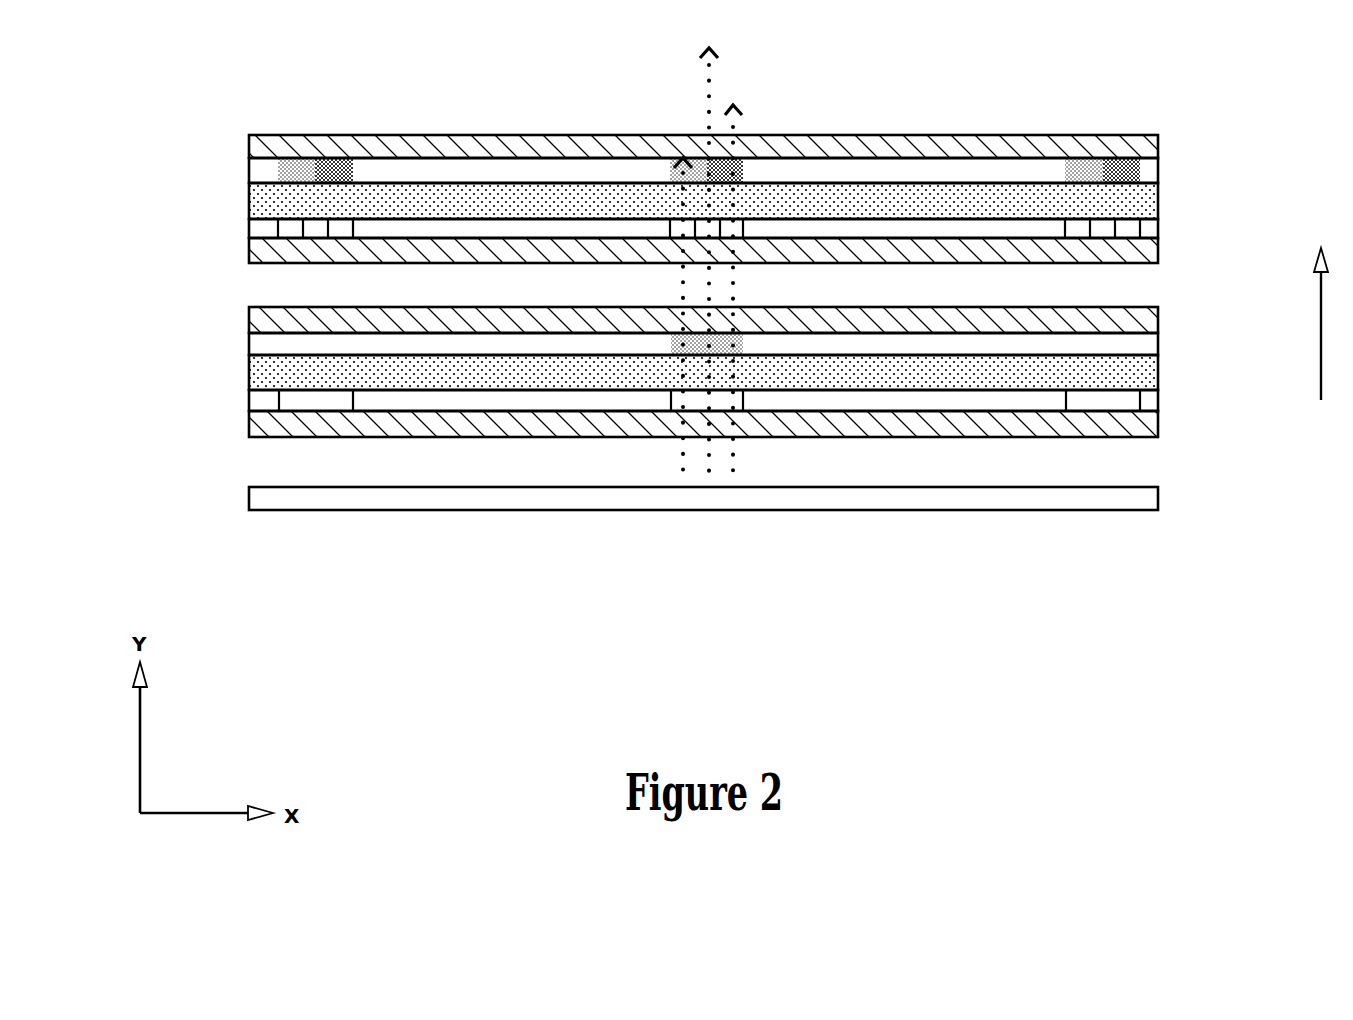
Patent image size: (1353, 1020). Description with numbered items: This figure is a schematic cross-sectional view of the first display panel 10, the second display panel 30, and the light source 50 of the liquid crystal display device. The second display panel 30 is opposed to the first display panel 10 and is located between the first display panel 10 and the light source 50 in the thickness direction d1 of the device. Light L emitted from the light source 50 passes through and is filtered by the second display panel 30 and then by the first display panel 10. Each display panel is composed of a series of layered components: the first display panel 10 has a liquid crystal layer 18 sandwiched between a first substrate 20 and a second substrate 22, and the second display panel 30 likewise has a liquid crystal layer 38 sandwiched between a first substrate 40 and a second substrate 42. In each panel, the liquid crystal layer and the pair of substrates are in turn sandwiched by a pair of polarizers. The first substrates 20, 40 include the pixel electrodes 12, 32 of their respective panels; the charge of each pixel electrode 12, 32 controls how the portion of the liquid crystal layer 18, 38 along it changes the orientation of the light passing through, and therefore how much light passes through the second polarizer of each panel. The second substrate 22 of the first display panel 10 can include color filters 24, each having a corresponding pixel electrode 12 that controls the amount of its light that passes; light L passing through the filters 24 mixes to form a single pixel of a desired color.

The first display panel 10 is at (131, 137).
The pixel electrode 12 is at (1078, 238).
The liquid crystal layer 18 is at (249, 201).
The first substrate 20 is at (692, 252).
The second substrate 22 is at (665, 115).
The filter 24 is at (1133, 165).
The second display panel 30 is at (131, 308).
The pixel electrode 32 is at (1118, 403).
The liquid crystal layer 38 is at (249, 372).
The first substrate 40 is at (705, 435).
The second substrate 42 is at (249, 344).
The light source 50 is at (249, 498).
The light L is at (733, 472).
The thickness direction d1 is at (1321, 346).